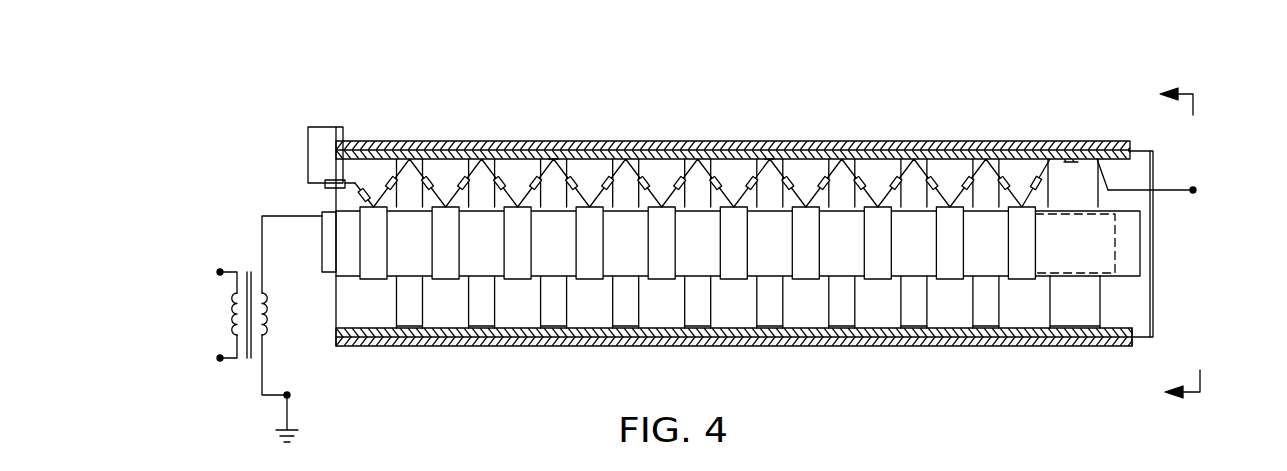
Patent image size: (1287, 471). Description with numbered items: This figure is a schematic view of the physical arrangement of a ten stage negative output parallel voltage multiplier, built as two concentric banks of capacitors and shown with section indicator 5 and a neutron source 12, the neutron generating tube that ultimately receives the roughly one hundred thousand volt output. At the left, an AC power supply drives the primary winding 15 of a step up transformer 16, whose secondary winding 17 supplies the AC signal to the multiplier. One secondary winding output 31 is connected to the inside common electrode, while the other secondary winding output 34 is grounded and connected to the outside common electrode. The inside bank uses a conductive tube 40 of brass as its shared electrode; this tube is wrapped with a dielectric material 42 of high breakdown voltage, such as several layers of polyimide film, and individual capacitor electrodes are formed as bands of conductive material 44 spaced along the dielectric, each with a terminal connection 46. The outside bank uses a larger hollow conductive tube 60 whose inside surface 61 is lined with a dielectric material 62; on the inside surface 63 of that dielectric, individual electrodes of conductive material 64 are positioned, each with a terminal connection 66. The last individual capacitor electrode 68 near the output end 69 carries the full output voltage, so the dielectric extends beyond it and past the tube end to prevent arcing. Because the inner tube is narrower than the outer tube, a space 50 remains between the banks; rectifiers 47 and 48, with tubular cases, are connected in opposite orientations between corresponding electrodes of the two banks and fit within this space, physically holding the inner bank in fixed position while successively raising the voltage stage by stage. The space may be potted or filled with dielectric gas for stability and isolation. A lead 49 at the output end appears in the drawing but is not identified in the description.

The section line 5- 5 is at (1194, 245).
The neutron source 12 is at (274, 147).
The primary winding 15 is at (232, 328).
The step up transformer 16 is at (246, 284).
The secondary winding 17 is at (267, 328).
The secondary winding output 31 is at (268, 212).
The secondary winding output 34 is at (268, 397).
The conductive tube 40 is at (1115, 253).
The dielectric material 42 is at (1078, 277).
The conductive material 44 is at (375, 280).
The terminal connection 46 is at (590, 163).
The rectifier 47 is at (389, 177).
The rectifier 48 is at (430, 178).
The output lead 49 is at (1193, 190).
The space 50 is at (1137, 294).
The hollow conductive tube 60 is at (668, 140).
The inside surface 61 is at (813, 314).
The dielectric material 62 is at (955, 158).
The inside surface 63 is at (1122, 330).
The conductive material 64 is at (493, 163).
The terminal connection 66 is at (553, 162).
The last individual capacitor electrode 68 is at (1068, 157).
The output end 69 is at (1175, 165).